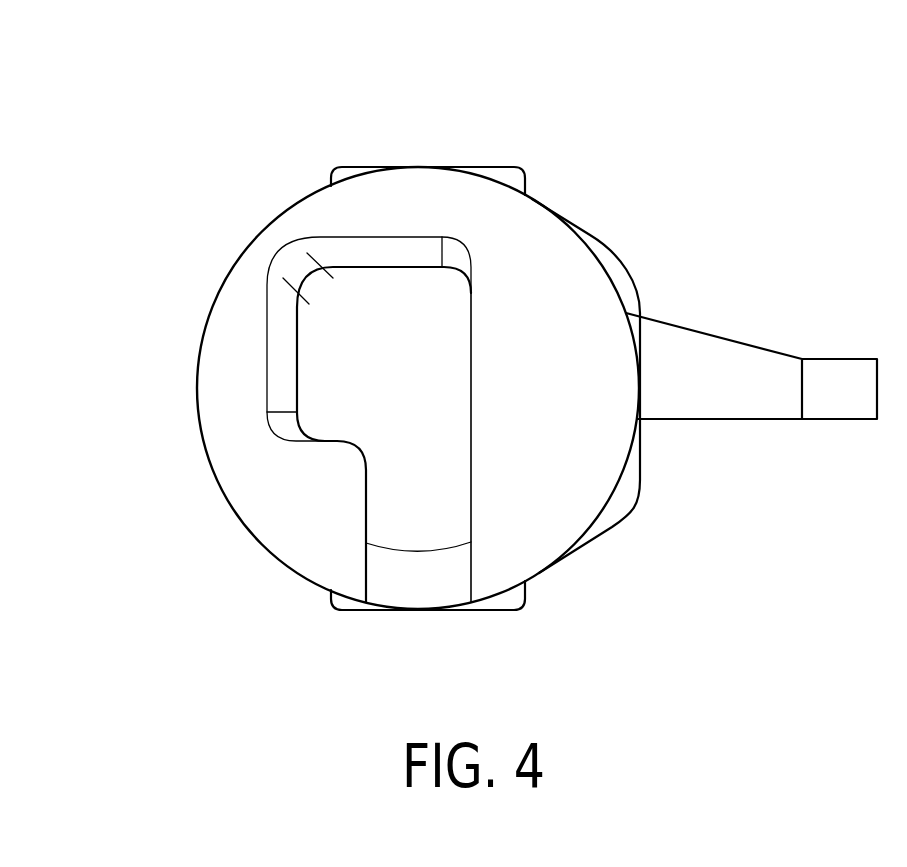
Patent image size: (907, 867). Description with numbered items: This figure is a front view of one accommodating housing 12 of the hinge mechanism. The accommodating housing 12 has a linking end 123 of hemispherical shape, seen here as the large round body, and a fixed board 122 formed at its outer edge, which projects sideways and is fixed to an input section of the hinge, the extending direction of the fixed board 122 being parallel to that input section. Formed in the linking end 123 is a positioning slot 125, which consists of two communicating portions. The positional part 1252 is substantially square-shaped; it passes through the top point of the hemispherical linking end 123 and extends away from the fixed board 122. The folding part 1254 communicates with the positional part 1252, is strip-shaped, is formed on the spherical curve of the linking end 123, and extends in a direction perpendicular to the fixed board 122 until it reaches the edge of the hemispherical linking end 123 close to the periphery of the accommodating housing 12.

The accommodating housing 12 is at (454, 338).
The fixed board 122 is at (712, 358).
The linking end 123 is at (420, 190).
The positioning slot 125 is at (251, 419).
The positional part 1252 is at (337, 360).
The folding part 1254 is at (417, 504).